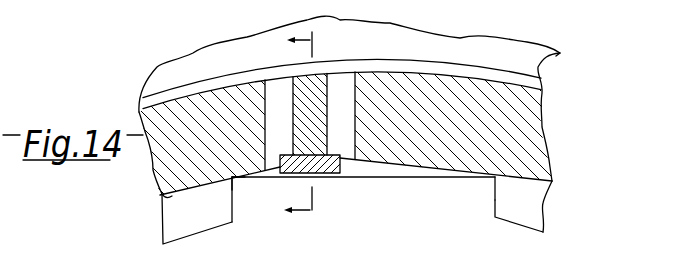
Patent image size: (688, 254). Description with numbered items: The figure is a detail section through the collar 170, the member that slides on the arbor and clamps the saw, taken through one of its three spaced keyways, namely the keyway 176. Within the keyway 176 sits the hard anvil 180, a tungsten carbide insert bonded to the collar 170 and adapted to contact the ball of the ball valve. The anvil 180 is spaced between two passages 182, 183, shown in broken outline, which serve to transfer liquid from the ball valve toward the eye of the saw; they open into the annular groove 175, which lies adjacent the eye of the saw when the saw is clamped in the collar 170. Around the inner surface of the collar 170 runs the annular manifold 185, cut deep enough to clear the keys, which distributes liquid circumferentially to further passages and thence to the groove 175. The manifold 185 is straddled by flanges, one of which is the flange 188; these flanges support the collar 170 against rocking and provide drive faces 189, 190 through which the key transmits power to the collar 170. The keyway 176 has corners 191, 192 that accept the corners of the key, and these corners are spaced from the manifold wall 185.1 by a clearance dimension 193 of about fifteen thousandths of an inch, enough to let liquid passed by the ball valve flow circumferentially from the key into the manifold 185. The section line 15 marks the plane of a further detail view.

The collar 170 is at (462, 36).
The annular groove 175 is at (537, 85).
The section line 15 is at (315, 125).
The passage 182 is at (270, 118).
The passage 183 is at (350, 103).
The anvil 180 is at (333, 174).
The clearance dimension 193 is at (230, 172).
The annular manifold 185 is at (163, 230).
The manifold wall 185.1 is at (164, 198).
The corner 191 is at (231, 188).
The drive face 190 is at (238, 184).
The keyway 176 is at (423, 186).
The corner 192 is at (495, 178).
The drive face 189 is at (495, 207).
The flange 188 is at (532, 204).